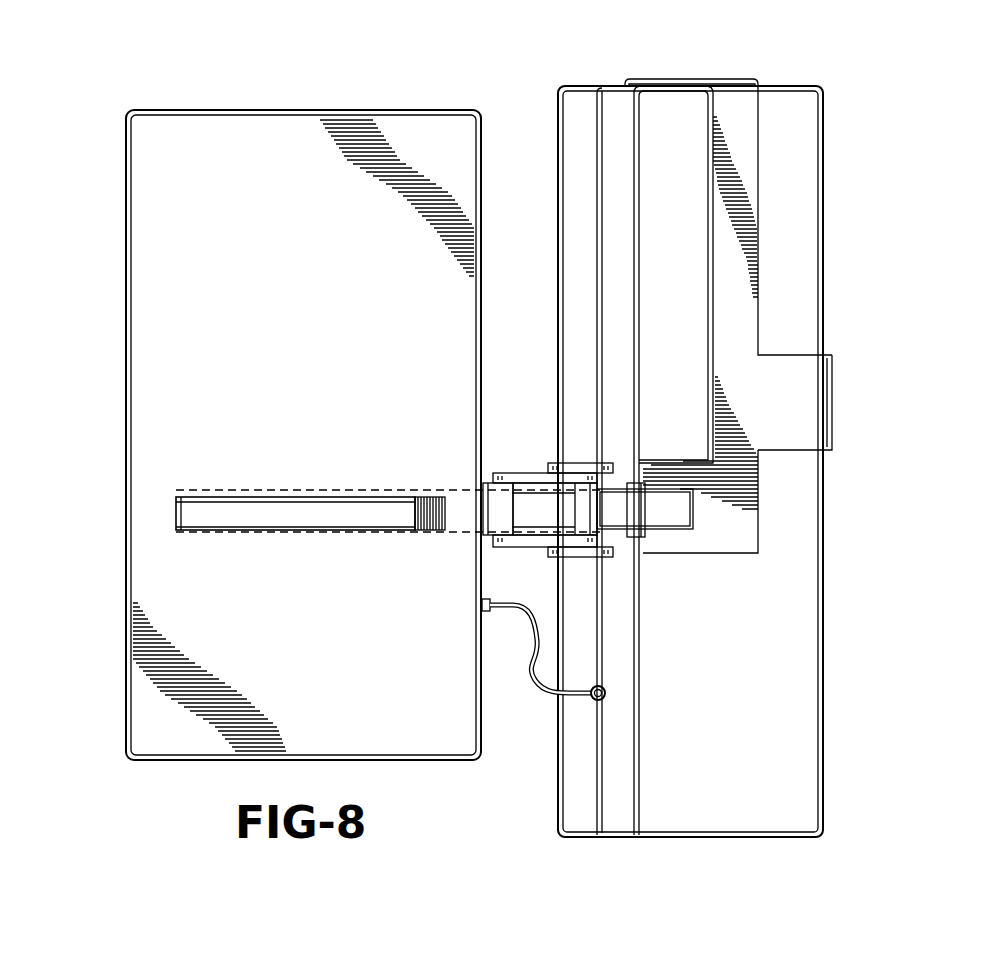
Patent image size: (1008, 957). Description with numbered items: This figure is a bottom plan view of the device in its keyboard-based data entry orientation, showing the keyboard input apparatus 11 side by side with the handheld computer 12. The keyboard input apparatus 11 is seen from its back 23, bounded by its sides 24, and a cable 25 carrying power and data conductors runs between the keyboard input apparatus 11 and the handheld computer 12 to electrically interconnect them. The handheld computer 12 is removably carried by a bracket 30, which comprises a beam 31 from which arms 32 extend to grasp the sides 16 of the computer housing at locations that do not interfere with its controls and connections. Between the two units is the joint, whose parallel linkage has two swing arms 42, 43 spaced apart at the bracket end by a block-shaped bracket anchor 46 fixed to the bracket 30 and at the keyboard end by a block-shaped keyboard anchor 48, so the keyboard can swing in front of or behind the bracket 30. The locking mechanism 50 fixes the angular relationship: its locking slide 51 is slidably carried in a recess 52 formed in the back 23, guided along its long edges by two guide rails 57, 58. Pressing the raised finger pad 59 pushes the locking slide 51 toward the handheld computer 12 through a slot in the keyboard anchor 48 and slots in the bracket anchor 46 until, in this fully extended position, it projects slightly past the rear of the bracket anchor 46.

The keyboard input apparatus 11 is at (389, 110).
The handheld computer 12 is at (808, 85).
The sides 16 is at (580, 796).
The back 23 is at (227, 152).
The sides 24 is at (168, 112).
The cable 25 is at (540, 690).
The bracket 30 is at (776, 500).
The beam 31 is at (745, 305).
The arms 32 is at (800, 400).
The swing arm 42 is at (524, 543).
The swing arm 43 is at (524, 478).
The bracket anchor 46 is at (590, 513).
The keyboard anchor 48 is at (490, 512).
The locking mechanism 50 is at (329, 515).
The locking slide 51 is at (367, 512).
The recess 52 is at (683, 518).
The guide rail 57 is at (275, 527).
The guide rail 58 is at (292, 497).
The finger pad 59 is at (430, 497).